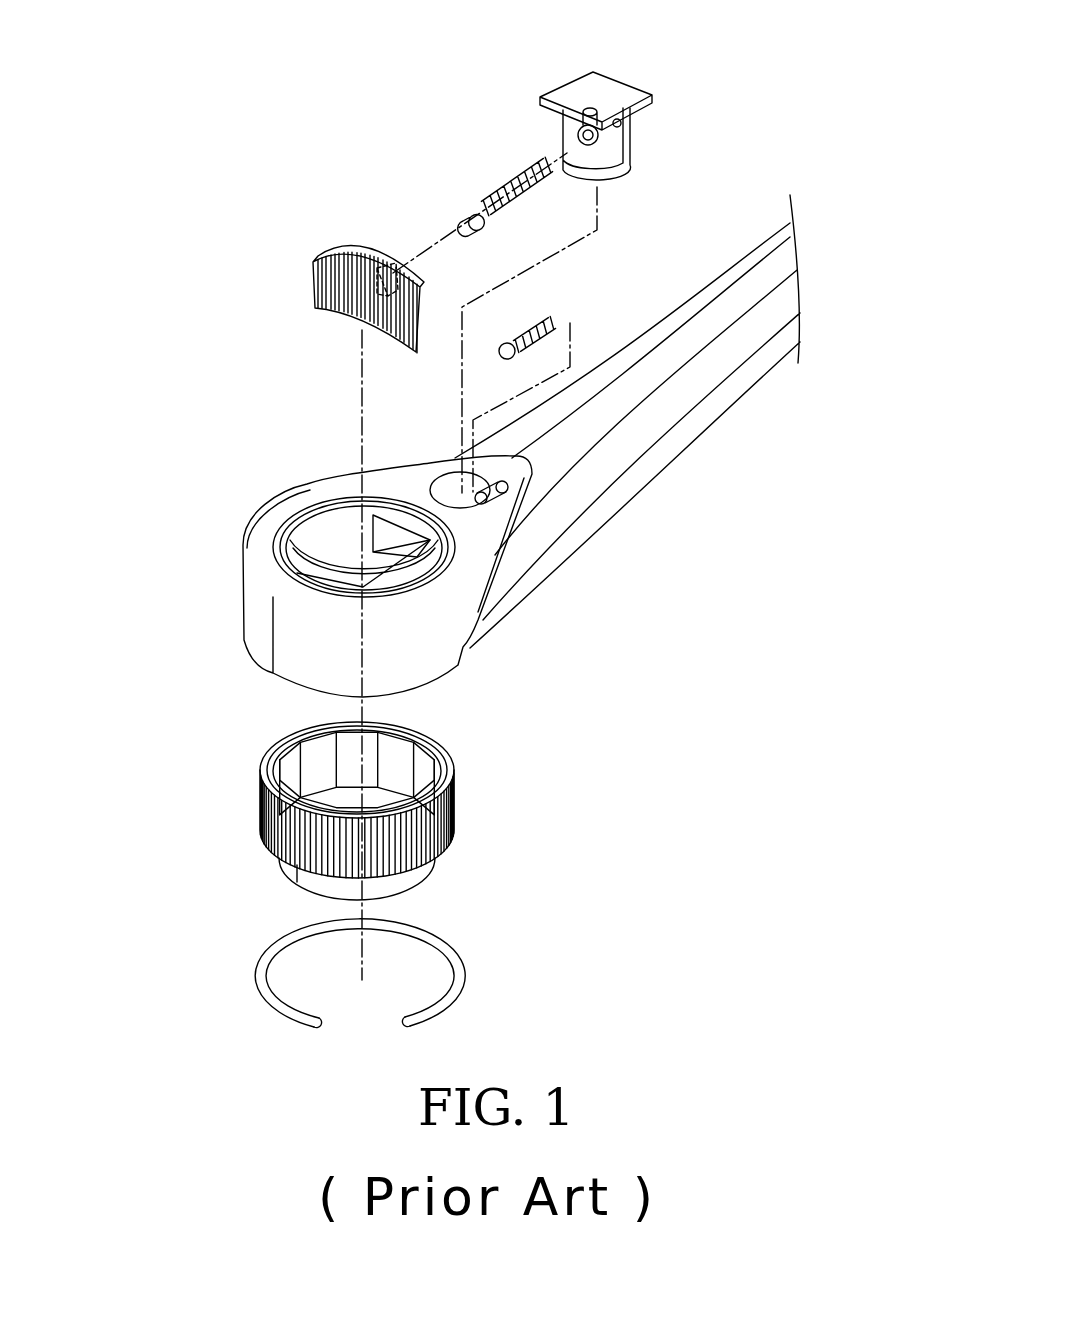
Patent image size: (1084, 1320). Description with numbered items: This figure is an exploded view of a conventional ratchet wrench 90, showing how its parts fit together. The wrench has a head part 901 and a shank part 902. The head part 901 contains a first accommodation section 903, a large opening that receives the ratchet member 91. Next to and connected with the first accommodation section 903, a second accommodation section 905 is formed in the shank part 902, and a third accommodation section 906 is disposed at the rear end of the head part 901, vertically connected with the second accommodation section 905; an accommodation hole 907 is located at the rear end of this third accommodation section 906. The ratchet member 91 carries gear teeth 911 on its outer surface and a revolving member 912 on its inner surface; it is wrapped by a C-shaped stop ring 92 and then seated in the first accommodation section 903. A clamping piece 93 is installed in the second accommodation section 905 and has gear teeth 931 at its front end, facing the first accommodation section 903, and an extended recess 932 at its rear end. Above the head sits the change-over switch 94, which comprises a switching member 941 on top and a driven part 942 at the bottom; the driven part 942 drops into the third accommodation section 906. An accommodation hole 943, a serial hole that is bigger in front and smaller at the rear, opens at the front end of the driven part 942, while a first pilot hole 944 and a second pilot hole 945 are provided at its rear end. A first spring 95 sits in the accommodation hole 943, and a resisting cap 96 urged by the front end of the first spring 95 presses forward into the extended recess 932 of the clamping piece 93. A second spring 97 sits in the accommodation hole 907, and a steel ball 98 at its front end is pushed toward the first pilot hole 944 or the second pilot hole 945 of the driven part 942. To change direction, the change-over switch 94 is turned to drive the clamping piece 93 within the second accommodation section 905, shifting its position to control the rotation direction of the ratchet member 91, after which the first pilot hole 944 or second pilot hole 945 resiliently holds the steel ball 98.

The ratchet wrench 90 is at (502, 452).
The head part 901 is at (262, 527).
The shank part 902 is at (593, 433).
The first accommodation section 903 is at (330, 521).
The second accommodation section 905 is at (386, 528).
The third accommodation section 906 is at (450, 478).
The accommodation hole 907 is at (507, 527).
The ratchet member 91 is at (389, 800).
The gear teeth 911 is at (455, 822).
The revolving member 912 is at (300, 755).
The C-shaped stop ring 92 is at (475, 943).
The clamping piece 93 is at (322, 252).
The gear teeth 931 is at (328, 292).
The extended recess 932 is at (397, 250).
The change-over switch 94 is at (586, 126).
The switching member 941 is at (620, 90).
The driven part 942 is at (633, 160).
The accommodation hole 943 is at (565, 133).
The first pilot hole 944 is at (627, 117).
The second pilot hole 945 is at (593, 117).
The first spring 95 is at (512, 207).
The resisting cap 96 is at (480, 235).
The second spring 97 is at (560, 322).
The steel ball 98 is at (512, 343).